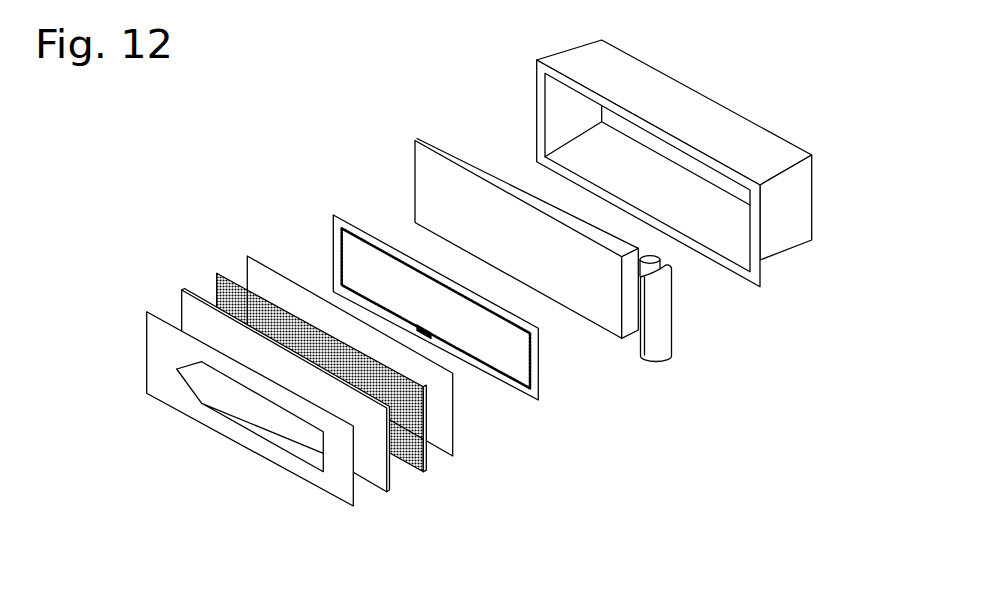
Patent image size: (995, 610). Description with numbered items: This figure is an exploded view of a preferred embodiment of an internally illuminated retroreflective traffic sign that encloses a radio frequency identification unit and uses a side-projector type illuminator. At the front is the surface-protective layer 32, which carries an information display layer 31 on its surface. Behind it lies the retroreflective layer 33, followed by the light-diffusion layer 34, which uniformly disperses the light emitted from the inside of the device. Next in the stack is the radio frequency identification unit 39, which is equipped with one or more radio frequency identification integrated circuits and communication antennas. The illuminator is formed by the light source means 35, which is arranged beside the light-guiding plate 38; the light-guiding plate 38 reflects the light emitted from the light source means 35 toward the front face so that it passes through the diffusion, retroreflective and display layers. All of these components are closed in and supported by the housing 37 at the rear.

The information display layer 31 is at (348, 497).
The surface-protective layer 32 is at (382, 482).
The retroreflective layer 33 is at (417, 456).
The light-diffusion layer 34 is at (448, 415).
The light source means 35 is at (657, 352).
The housing 37 is at (772, 247).
The light-guiding plate 38 is at (603, 319).
The radio frequency identification unit 39 is at (532, 397).